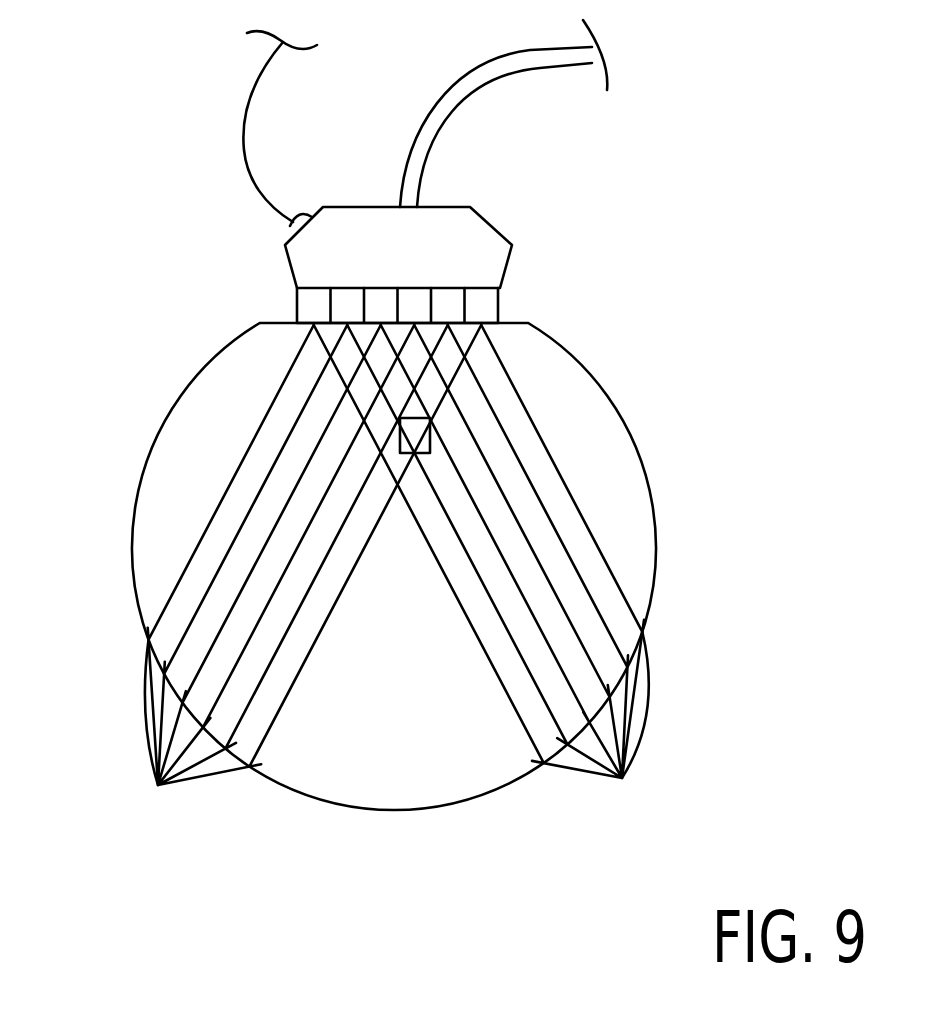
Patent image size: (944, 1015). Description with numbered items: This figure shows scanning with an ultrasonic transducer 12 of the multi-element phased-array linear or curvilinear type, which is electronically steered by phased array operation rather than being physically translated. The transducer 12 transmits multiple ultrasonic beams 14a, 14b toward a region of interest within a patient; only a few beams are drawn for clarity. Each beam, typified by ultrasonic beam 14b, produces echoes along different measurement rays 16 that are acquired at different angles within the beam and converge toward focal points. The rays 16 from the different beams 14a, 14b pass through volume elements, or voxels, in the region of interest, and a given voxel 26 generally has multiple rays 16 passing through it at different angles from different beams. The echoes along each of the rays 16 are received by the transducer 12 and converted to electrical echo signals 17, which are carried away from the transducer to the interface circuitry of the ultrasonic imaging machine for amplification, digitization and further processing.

The ultrasonic transducer 12 is at (475, 243).
The ultrasonic beam 14a is at (233, 482).
The ultrasonic beam 14b is at (562, 510).
The measurement rays 16 is at (393, 731).
The electrical echo signals 17 is at (243, 117).
The voxel 26 is at (432, 443).